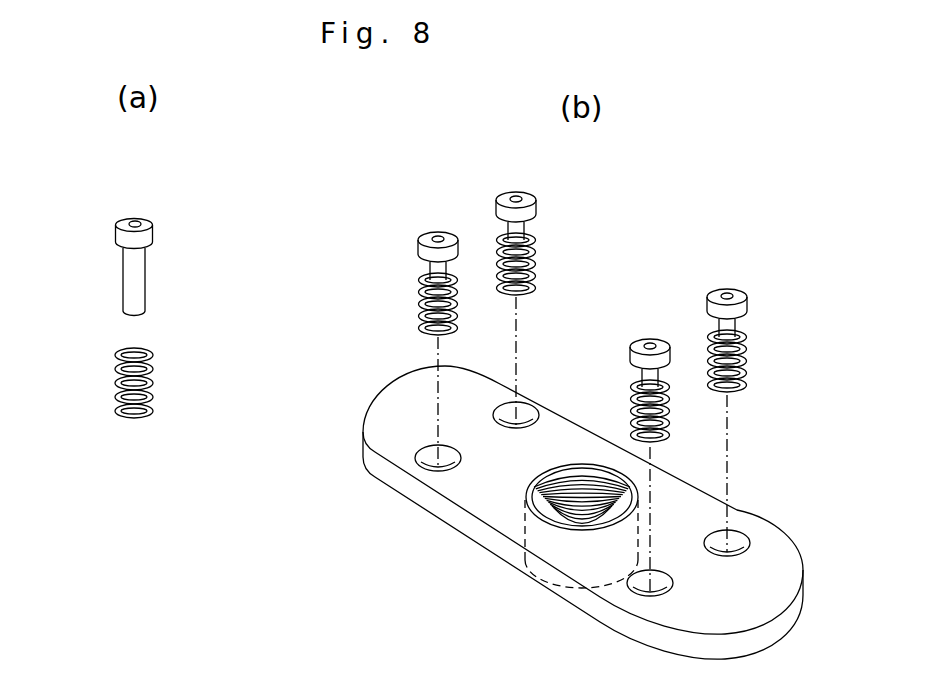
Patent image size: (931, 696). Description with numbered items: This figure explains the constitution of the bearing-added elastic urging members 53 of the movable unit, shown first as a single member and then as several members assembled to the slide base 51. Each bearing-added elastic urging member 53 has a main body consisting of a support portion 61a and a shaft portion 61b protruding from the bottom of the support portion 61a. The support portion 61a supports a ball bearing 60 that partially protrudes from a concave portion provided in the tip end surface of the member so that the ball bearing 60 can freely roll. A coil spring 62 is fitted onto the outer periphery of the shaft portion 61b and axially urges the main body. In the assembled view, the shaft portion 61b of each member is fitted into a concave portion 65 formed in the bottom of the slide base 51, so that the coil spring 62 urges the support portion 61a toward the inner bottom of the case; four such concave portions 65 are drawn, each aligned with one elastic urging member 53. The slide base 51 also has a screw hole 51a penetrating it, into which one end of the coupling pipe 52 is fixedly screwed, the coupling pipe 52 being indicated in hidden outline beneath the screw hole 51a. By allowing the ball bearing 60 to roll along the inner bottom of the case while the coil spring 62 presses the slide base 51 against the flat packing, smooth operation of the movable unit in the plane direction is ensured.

The slide base 51 is at (482, 523).
The screw hole 51a is at (576, 482).
The coupling pipe 52 is at (524, 569).
The bearing-added elastic urging member 53 is at (388, 372).
The ball bearing 60 is at (141, 221).
The support portion 61a is at (151, 238).
The shaft portion 61b is at (140, 300).
The coil spring 62 is at (153, 383).
The concave portion 65 is at (498, 414).